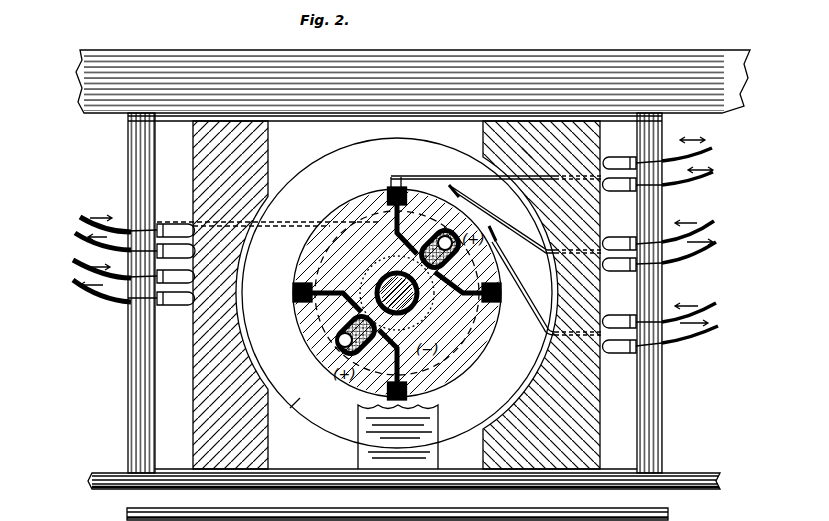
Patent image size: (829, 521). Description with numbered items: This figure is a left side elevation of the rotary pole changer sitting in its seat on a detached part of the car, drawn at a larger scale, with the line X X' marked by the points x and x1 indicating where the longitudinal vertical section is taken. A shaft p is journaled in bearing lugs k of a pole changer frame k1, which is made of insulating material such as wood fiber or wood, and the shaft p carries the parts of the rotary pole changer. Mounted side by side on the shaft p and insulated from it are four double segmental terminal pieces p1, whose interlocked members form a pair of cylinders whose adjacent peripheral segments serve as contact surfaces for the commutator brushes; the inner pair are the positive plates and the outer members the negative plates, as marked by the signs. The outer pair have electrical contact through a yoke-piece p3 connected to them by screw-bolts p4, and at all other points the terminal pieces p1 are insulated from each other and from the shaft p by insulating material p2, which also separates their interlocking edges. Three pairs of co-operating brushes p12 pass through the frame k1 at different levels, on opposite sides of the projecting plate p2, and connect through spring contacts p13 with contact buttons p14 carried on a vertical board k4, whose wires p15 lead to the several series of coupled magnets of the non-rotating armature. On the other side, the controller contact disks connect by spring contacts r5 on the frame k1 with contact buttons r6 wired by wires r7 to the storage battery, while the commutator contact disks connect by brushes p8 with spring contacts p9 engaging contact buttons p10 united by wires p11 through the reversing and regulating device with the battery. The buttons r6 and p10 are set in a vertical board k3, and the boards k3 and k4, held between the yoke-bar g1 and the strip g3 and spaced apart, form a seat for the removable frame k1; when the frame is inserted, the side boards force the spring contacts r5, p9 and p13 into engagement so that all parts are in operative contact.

The yoke-bar g1 is at (531, 62).
The strip g3 is at (696, 483).
The bearing lugs k is at (357, 448).
The pole changer frame k1 is at (254, 450).
The vertical board k3 is at (140, 403).
The vertical board k4 is at (652, 425).
The shaft p is at (375, 280).
The double segmental terminal pieces p1 is at (308, 335).
The insulating material p2 is at (317, 176).
The yoke-piece p3 is at (327, 342).
The screw-bolts p4 is at (337, 367).
The brushes p8 is at (213, 303).
The spring contacts p9 is at (445, 241).
The contact buttons p10 is at (153, 300).
The wires p11 is at (73, 272).
The brushes p12 is at (440, 166).
The spring contacts p13 is at (617, 163).
The contact buttons p14 is at (660, 190).
The wires p15 is at (717, 163).
The spring contacts r5 is at (172, 245).
The contact buttons r6 is at (152, 258).
The wires r7 is at (78, 223).
The section line x is at (523, 149).
The section line x1 is at (288, 411).